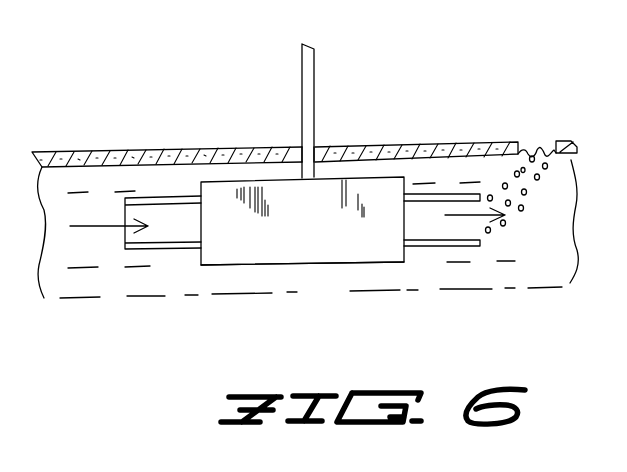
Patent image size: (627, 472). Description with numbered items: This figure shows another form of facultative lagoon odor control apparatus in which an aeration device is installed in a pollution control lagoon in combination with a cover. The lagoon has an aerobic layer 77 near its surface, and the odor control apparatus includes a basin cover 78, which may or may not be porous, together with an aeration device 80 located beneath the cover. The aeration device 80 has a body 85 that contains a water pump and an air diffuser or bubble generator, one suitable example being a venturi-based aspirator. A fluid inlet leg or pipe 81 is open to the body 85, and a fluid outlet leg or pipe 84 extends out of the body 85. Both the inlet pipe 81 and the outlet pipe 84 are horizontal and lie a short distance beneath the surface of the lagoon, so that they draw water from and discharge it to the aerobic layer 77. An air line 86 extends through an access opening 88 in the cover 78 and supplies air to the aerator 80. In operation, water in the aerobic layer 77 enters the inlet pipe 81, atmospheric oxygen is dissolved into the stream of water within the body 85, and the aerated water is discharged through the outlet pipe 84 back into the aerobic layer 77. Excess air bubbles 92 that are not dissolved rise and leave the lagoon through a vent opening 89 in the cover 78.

The aerobic layer 77 is at (80, 287).
The basin cover 78 is at (159, 136).
The aeration device 80 is at (328, 266).
The fluid inlet leg or pipe 81 is at (172, 252).
The fluid outlet leg or pipe 84 is at (428, 247).
The body 85 is at (258, 252).
The air line 86 is at (312, 70).
The access opening 88 is at (315, 142).
The vent opening 89 is at (532, 140).
The excess air bubbles 92 is at (540, 176).